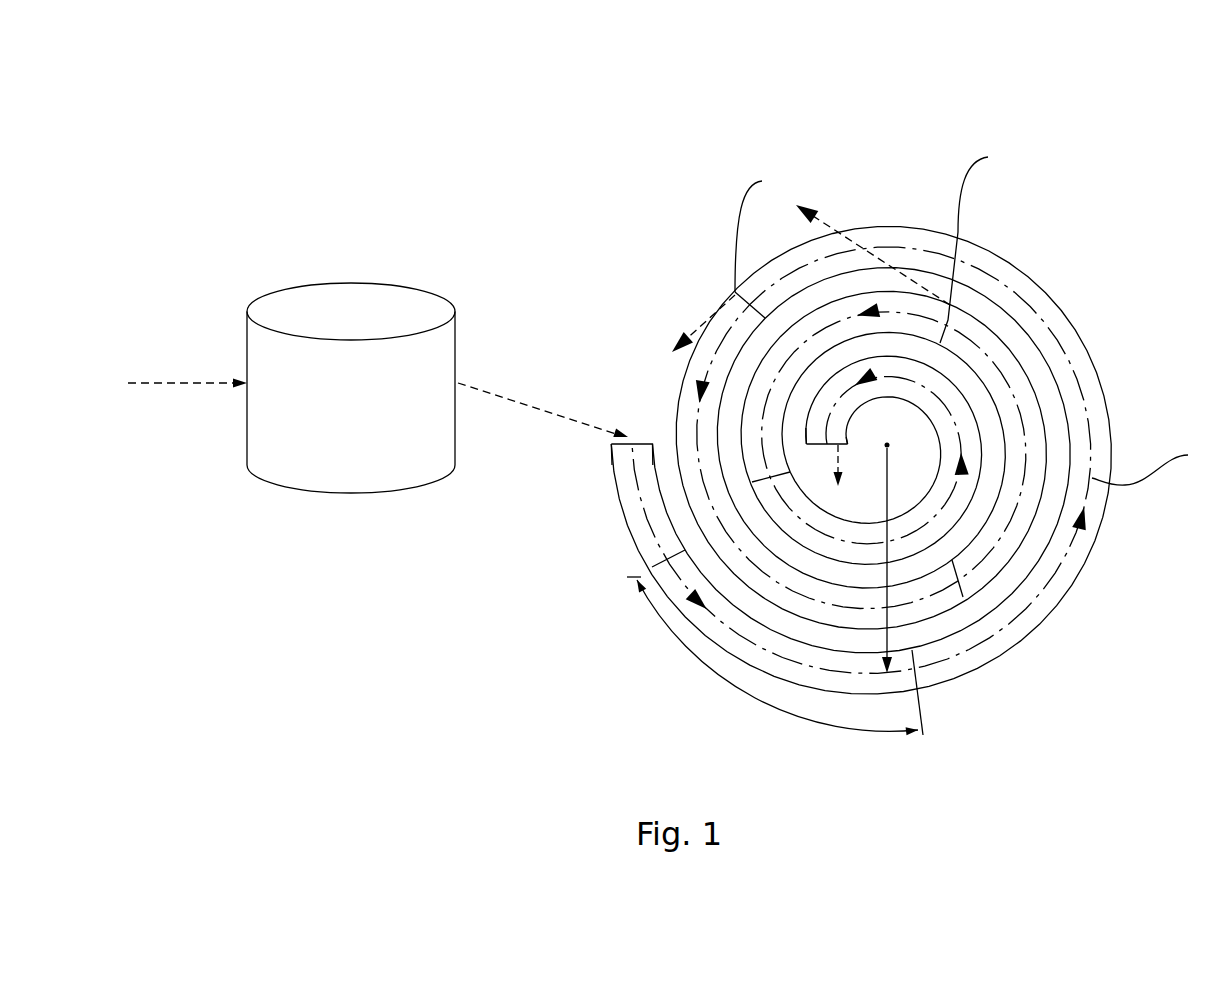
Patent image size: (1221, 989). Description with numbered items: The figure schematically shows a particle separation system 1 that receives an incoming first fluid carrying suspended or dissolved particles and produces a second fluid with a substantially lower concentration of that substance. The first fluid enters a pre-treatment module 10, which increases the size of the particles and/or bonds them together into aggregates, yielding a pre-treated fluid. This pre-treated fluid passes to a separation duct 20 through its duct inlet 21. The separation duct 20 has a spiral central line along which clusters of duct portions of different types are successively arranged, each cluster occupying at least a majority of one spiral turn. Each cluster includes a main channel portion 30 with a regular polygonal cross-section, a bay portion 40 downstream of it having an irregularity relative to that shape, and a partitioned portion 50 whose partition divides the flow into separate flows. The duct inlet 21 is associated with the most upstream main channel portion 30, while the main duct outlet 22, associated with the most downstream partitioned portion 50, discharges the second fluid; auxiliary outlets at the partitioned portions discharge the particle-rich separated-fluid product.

The particle separation system 1 is at (522, 135).
The pre-treatment module 10 is at (322, 298).
The separation duct 20 is at (890, 203).
The duct inlet 21 is at (625, 430).
The main duct outlet 22 is at (813, 440).
The main channel portion 30 is at (703, 492).
The bay portion 40 is at (930, 607).
The partitioned portion 50 is at (968, 428).